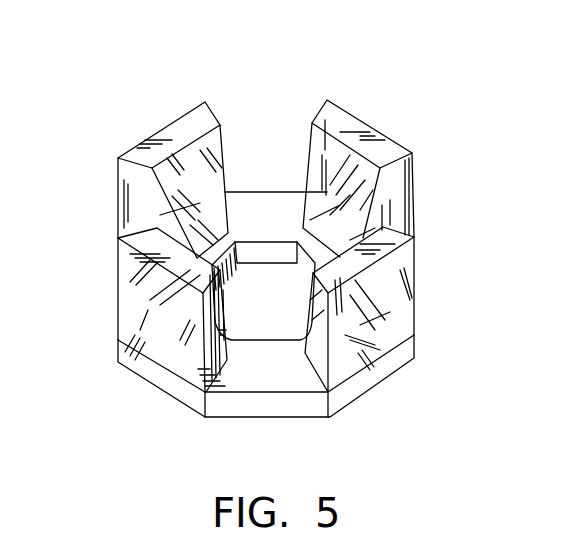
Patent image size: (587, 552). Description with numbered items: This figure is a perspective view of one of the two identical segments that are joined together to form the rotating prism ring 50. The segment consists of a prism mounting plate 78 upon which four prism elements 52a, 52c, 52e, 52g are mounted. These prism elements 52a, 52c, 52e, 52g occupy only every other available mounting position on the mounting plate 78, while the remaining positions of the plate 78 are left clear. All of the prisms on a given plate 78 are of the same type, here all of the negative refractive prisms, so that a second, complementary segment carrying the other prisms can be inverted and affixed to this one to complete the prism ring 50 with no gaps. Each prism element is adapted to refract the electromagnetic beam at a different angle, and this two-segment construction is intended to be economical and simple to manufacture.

The prism ring 50 is at (391, 106).
The prism element 52a is at (400, 178).
The prism element 52c is at (137, 183).
The prism element 52e is at (142, 308).
The prism element 52g is at (393, 303).
The prism mounting plate 78 is at (307, 407).